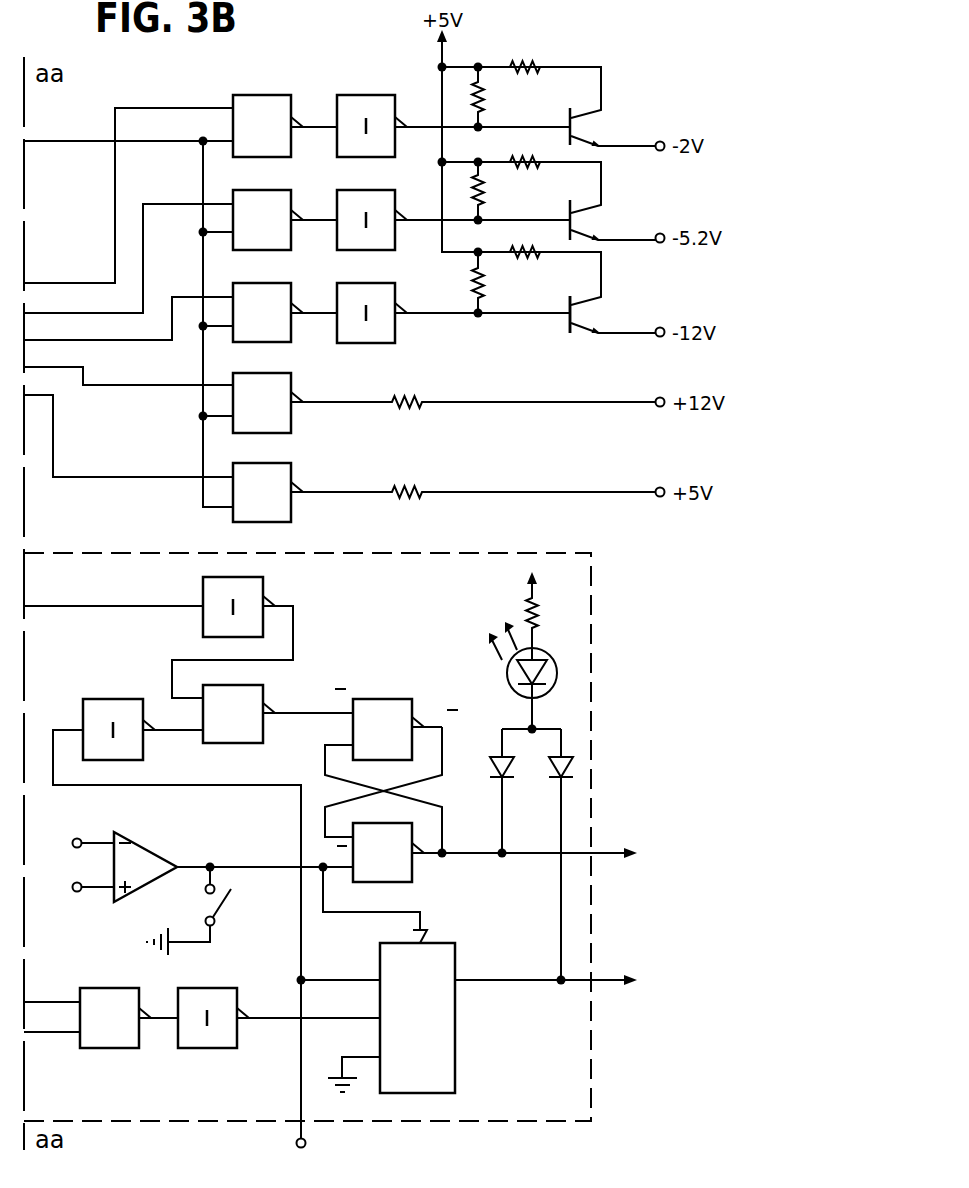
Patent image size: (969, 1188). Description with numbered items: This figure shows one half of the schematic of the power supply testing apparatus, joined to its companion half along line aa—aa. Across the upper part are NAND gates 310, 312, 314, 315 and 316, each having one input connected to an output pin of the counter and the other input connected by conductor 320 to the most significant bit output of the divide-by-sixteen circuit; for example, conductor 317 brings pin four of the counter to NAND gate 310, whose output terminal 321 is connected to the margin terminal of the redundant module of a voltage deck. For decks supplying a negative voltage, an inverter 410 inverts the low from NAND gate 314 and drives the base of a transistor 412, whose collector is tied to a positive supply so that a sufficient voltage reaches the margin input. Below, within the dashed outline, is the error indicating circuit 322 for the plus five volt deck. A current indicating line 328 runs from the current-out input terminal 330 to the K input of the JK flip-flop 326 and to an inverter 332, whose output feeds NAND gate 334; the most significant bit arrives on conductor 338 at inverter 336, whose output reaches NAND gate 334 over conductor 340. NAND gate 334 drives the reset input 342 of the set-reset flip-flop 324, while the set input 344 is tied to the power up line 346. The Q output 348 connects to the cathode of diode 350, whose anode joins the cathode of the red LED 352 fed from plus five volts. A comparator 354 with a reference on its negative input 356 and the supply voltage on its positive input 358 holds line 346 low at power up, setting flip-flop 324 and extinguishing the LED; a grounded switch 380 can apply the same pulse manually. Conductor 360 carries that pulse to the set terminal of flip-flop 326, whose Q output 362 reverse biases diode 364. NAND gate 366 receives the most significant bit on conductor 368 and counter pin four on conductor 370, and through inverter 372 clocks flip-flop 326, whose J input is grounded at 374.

The NAND gate 310 is at (293, 470).
The NAND gate 312 is at (286, 373).
The NAND gate 314 is at (265, 283).
The NAND gate 315 is at (264, 190).
The NAND gate 316 is at (262, 95).
The conductor 317 is at (157, 476).
The conductor 320 is at (97, 140).
The terminal 321 is at (656, 495).
The error indicating circuit 322 is at (591, 590).
The set-reset flip-flop 324 is at (380, 684).
The JK flip-flop 326 is at (455, 1022).
The current indicating line 328 is at (298, 817).
The current-out input terminal 330 is at (306, 1143).
The inverter 332 is at (120, 700).
The NAND gate 334 is at (222, 738).
The inverter 336 is at (265, 587).
The conductor 338 is at (115, 605).
The conductor 340 is at (293, 628).
The reset input 342 is at (352, 716).
The set input 344 is at (356, 882).
The power up line 346 is at (280, 866).
The Q output 348 is at (445, 856).
The diode 350 is at (498, 780).
The red LED 352 is at (557, 673).
The comparator 354 is at (143, 843).
The negative input 356 is at (73, 840).
The positive input 358 is at (73, 890).
The conductor 360 is at (422, 917).
The Q output 362 is at (457, 978).
The diode 364 is at (556, 780).
The NAND gate 366 is at (118, 1050).
The conductor 368 is at (45, 1000).
The conductor 370 is at (45, 1035).
The inverter 372 is at (197, 1044).
The ground 374 is at (348, 1090).
The grounded switch 380 is at (226, 906).
The inverter 410 is at (392, 323).
The transistor 412 is at (567, 326).